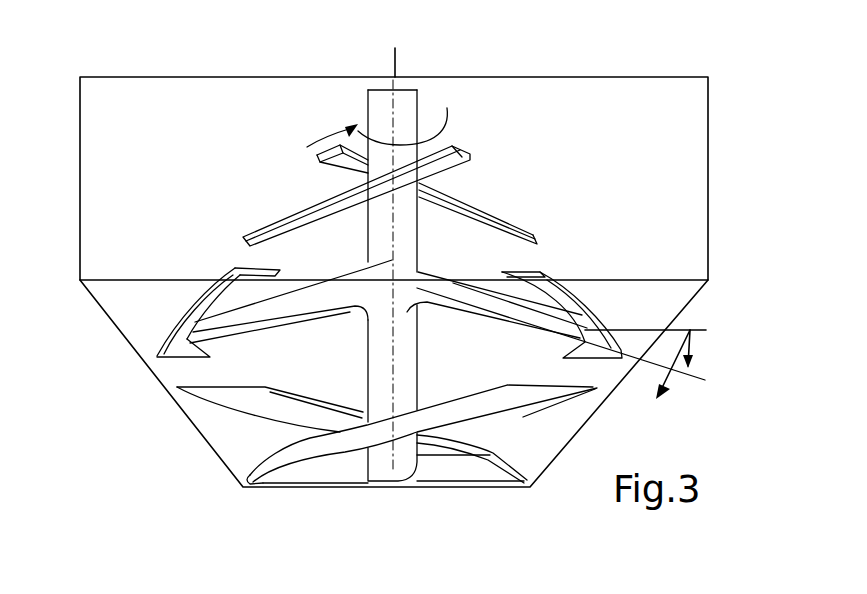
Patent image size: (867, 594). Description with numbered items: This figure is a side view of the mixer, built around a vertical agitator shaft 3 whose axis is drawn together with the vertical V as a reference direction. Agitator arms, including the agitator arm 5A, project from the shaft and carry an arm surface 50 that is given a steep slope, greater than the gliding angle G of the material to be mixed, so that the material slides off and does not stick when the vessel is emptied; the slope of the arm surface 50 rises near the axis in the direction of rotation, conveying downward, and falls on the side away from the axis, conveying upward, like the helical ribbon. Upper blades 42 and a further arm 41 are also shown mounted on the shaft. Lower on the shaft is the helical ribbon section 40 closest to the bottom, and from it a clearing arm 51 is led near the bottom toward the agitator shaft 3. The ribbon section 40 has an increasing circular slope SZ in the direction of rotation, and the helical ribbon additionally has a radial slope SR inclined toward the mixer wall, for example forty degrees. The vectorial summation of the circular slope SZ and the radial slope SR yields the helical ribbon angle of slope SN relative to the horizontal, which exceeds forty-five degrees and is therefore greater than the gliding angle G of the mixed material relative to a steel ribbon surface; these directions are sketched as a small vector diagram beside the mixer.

The agitator shaft 3 is at (382, 112).
The vertical V is at (399, 72).
The upper mixing blades 42 is at (487, 205).
The agitator arm 5A is at (318, 306).
The arm surface 50 is at (297, 300).
The arm with scoop blade 41 is at (525, 276).
The helical ribbon section 40 is at (450, 418).
The clearing arm 51 is at (295, 477).
The gliding angle G is at (691, 327).
The helical ribbon angle of slope SN is at (675, 340).
The radial slope SR is at (692, 353).
The circular slope SZ is at (676, 388).